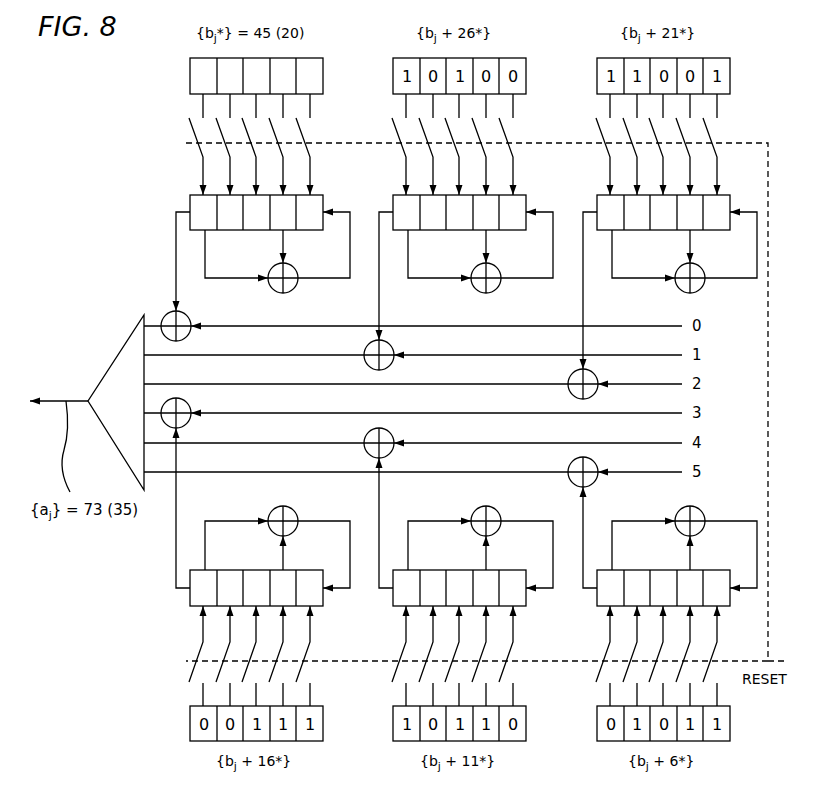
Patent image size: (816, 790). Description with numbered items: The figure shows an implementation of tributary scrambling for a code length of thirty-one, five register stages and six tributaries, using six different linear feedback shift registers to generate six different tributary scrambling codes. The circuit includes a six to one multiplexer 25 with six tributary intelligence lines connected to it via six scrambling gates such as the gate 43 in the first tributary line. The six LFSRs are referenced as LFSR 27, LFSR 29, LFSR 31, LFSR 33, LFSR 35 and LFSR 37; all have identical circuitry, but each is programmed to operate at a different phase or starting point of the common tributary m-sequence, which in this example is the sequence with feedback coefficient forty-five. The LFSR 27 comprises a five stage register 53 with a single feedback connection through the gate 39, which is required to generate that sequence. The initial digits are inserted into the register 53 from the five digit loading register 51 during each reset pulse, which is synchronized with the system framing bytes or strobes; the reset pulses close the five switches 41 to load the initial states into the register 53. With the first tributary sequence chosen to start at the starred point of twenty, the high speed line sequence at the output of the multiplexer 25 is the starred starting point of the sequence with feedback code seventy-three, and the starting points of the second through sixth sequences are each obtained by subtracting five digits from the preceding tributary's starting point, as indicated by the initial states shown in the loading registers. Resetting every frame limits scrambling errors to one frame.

The 6 to 1 multiplexer 25 is at (120, 354).
The LFSR 27 is at (221, 144).
The LFSR 29 is at (380, 131).
The LFSR 31 is at (584, 131).
The LFSR 33 is at (180, 671).
The LFSR 35 is at (384, 671).
The LFSR 37 is at (588, 671).
The gate 39 is at (294, 289).
The switches 41 is at (192, 150).
The scrambling gate 43 is at (190, 320).
The loading register 51 is at (190, 72).
The register 53 is at (190, 206).